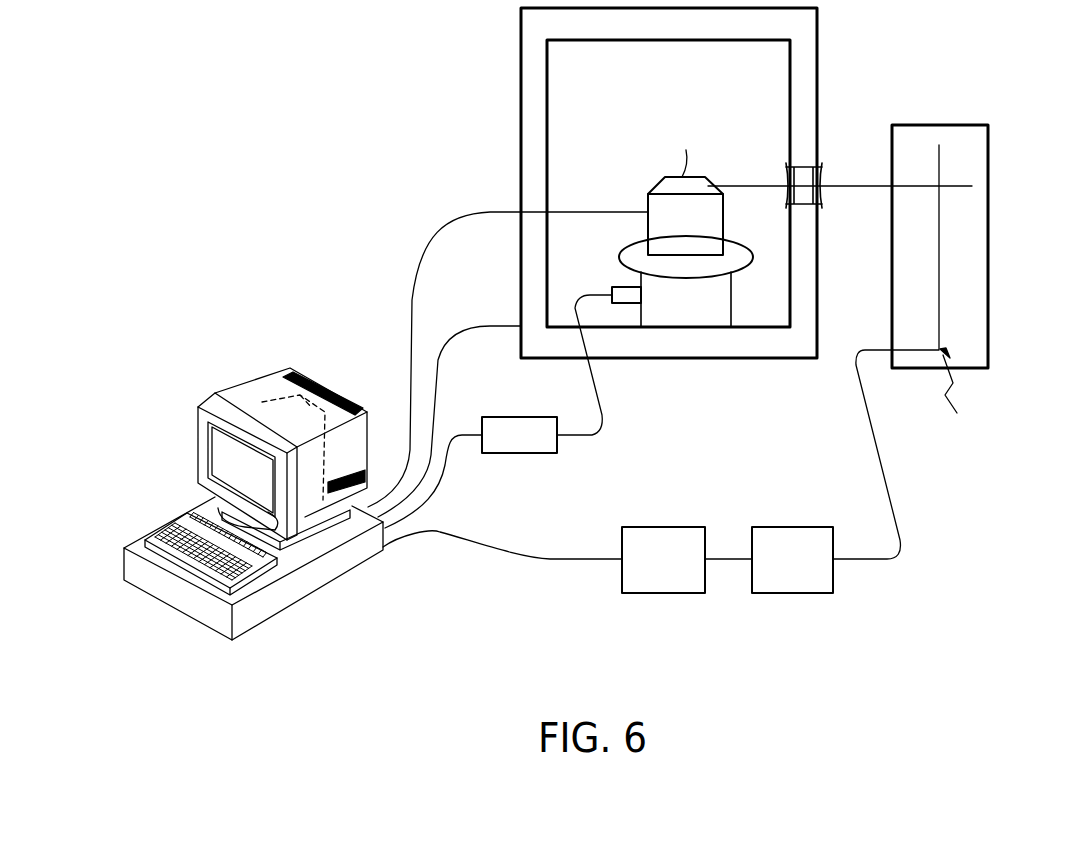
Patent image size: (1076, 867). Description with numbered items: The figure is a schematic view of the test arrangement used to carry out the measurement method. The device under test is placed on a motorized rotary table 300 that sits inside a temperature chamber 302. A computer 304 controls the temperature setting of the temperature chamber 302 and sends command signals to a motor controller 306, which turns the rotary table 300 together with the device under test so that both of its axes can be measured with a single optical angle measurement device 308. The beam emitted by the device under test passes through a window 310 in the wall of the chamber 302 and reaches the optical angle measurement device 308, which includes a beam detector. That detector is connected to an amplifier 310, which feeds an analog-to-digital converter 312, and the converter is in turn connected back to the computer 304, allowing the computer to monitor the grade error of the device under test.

The motorized rotary table 300 is at (640, 250).
The temperature chamber 302 is at (818, 41).
The computer 304 is at (310, 593).
The motor controller 306 is at (520, 447).
The optical angle measurement device 308 is at (988, 242).
The window 310 is at (822, 170).
The analog-to-digital converter 312 is at (665, 587).